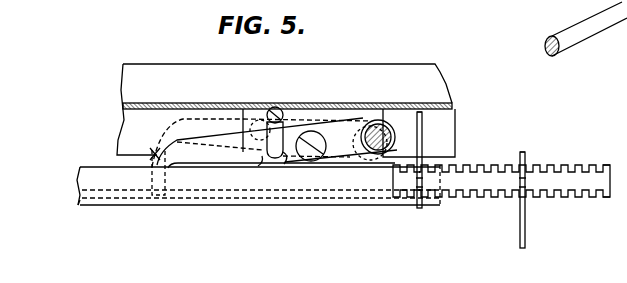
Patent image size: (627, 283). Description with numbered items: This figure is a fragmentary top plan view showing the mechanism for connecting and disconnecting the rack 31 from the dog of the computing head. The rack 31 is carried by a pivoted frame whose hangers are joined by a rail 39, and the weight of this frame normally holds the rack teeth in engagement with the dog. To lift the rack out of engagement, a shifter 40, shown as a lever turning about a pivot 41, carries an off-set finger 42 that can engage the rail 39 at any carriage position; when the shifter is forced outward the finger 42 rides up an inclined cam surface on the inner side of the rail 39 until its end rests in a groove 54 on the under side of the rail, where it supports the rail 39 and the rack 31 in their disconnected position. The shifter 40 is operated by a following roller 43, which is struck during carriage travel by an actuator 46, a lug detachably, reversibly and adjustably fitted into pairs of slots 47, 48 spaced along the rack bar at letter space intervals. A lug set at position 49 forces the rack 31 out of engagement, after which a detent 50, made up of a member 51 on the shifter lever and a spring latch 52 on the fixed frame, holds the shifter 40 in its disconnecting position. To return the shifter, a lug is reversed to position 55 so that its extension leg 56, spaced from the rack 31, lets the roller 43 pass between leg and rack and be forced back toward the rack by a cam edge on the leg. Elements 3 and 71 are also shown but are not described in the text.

The rod 3 is at (620, 14).
The rack 31 is at (501, 181).
The rail 39 is at (258, 185).
The shifter 40 is at (217, 140).
The pivot 41 is at (305, 152).
The off-set finger 42 is at (160, 160).
The following roller 43 is at (385, 124).
The actuator 46 is at (418, 198).
The slots 47 is at (596, 196).
The slots 48 is at (598, 167).
The lug position 49 is at (526, 153).
The detent 50 is at (286, 128).
The member 51 is at (283, 160).
The spring latch 52 is at (262, 158).
The groove 54 is at (78, 196).
The reversed lug position 55 is at (423, 140).
The extension leg 56 is at (417, 124).
The notch 71 is at (416, 181).